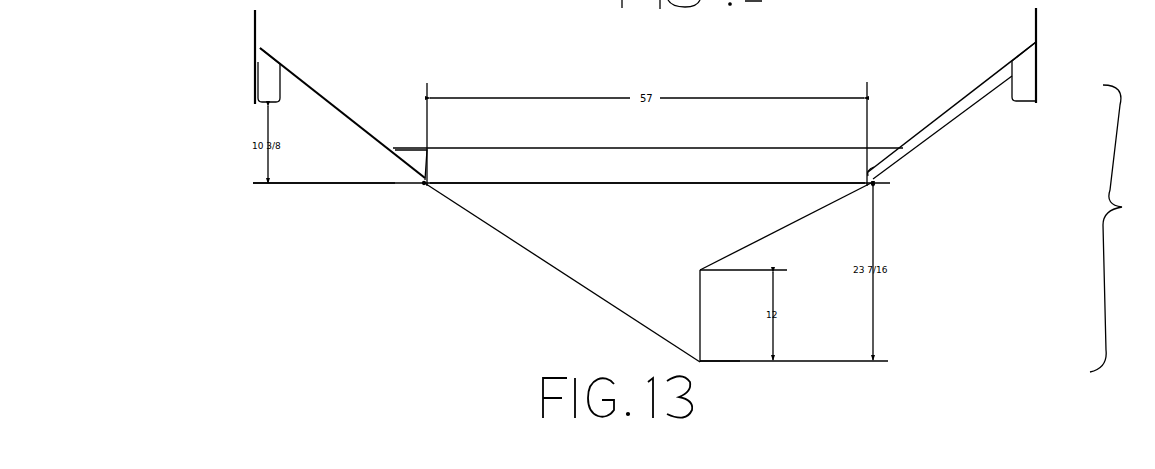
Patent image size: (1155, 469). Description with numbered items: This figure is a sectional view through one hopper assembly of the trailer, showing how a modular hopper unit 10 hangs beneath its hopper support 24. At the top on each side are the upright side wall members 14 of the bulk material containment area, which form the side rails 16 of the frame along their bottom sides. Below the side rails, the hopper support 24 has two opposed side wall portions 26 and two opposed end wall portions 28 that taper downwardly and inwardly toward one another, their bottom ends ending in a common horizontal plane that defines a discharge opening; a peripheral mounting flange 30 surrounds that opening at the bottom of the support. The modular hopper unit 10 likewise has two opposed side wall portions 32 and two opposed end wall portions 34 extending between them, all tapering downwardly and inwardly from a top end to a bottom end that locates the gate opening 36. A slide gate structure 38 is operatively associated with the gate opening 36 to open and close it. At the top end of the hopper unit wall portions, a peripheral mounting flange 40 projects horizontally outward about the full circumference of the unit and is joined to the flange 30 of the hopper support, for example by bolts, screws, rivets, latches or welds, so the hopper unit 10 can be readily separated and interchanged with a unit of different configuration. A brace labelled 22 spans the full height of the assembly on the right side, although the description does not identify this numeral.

The modular hopper unit 10 is at (455, 290).
The side wall member 14 is at (255, 22).
The side rail 16 is at (258, 62).
The frame assembly 22 is at (1122, 228).
The hopper support 24 is at (320, 156).
The side wall portion 26 is at (326, 103).
The end wall portion 28 is at (660, 79).
The peripheral mounting flange 30 is at (422, 178).
The side wall portion 32 is at (512, 240).
The end wall portion 34 is at (650, 221).
The gate opening 36 is at (683, 307).
The gate structure 38 is at (700, 333).
The peripheral mounting flange 40 is at (420, 187).